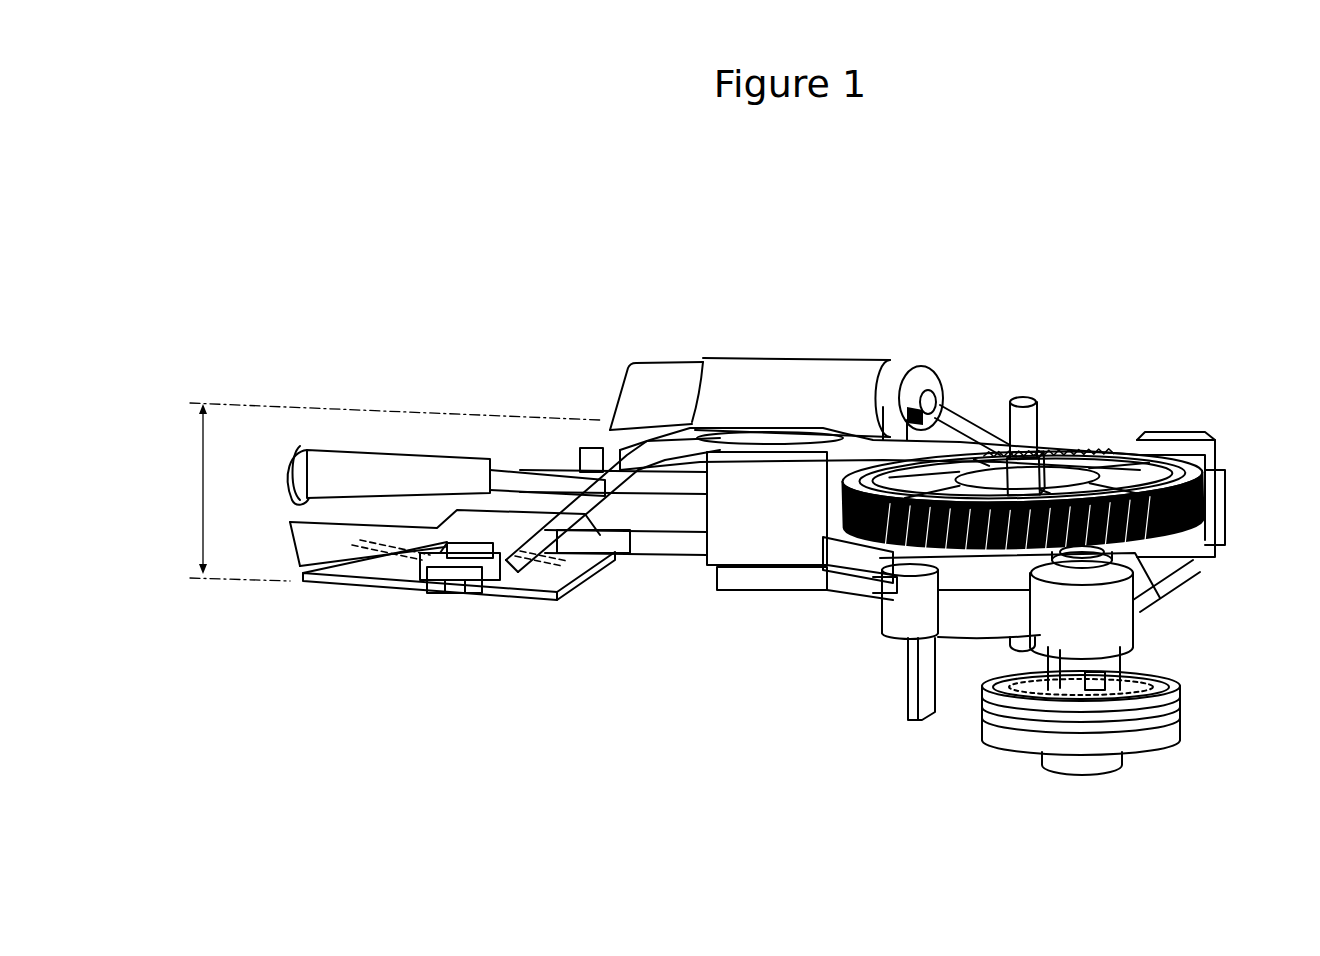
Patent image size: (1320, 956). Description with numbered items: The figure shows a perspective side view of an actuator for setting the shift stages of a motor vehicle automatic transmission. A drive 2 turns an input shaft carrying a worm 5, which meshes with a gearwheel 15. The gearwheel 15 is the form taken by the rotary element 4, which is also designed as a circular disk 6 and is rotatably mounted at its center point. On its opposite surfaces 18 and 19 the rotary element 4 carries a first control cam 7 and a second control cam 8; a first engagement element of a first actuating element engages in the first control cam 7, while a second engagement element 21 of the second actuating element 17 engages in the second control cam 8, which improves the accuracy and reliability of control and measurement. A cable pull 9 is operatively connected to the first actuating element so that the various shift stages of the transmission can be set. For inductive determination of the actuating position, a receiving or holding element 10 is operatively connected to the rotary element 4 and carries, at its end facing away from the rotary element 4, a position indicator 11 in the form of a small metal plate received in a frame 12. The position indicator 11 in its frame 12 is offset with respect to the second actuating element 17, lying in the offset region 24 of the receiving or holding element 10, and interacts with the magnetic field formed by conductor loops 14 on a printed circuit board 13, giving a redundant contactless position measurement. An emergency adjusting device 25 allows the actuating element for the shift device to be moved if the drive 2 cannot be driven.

The drive 2 is at (790, 410).
The rotary element 4 is at (1113, 455).
The worm 5 is at (1072, 455).
The circular disk 6 is at (1113, 455).
The first control cam 7 is at (1168, 542).
The second control cam 8 is at (905, 490).
The cable pull 9 is at (525, 478).
The receiving or holding element 10 is at (628, 462).
The position indicator 11 is at (453, 560).
The frame 12 is at (472, 553).
The printed circuit board 13 is at (402, 538).
The conductor loops 14 is at (367, 563).
The gearwheel 15 is at (1113, 455).
The second actuating element 17 is at (850, 443).
The surface 18 is at (940, 557).
The surface 19 is at (1177, 477).
The second engagement element 21 is at (910, 470).
The offset region 24 is at (188, 518).
The emergency adjusting device 25 is at (1132, 766).